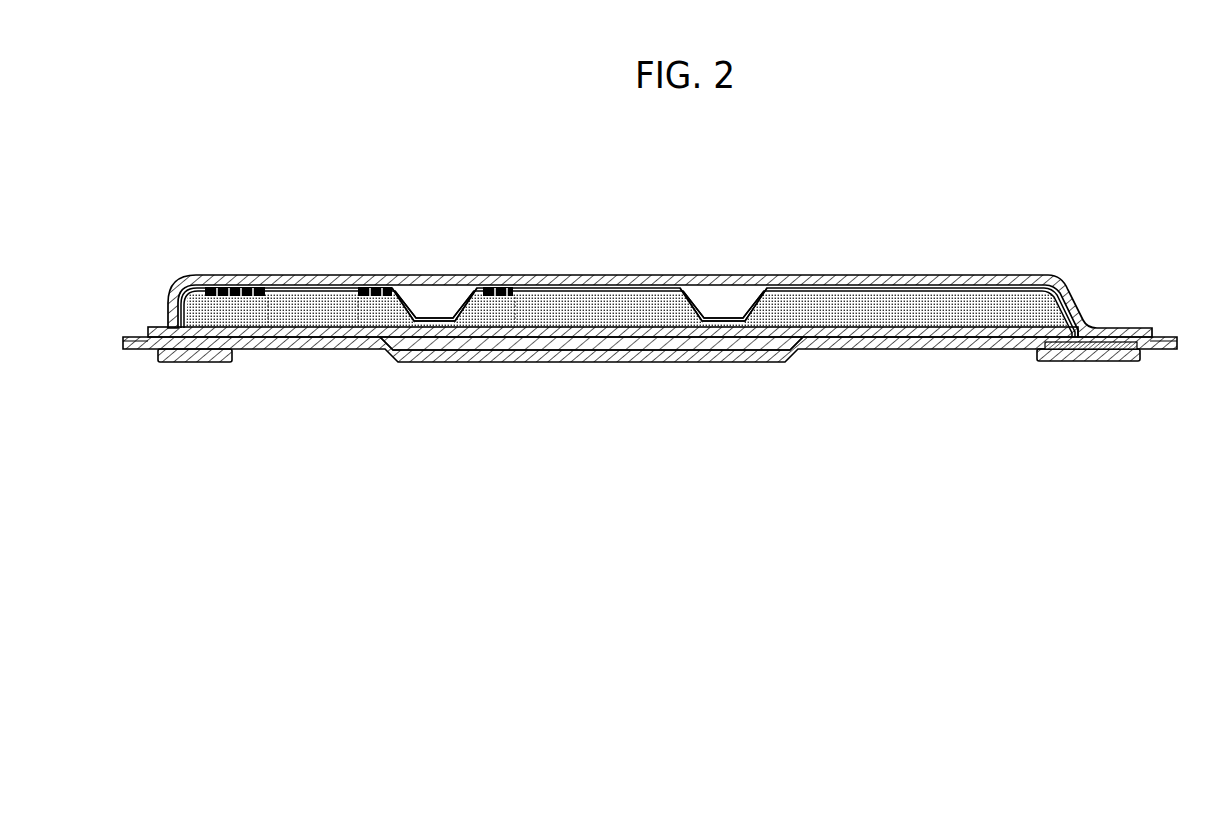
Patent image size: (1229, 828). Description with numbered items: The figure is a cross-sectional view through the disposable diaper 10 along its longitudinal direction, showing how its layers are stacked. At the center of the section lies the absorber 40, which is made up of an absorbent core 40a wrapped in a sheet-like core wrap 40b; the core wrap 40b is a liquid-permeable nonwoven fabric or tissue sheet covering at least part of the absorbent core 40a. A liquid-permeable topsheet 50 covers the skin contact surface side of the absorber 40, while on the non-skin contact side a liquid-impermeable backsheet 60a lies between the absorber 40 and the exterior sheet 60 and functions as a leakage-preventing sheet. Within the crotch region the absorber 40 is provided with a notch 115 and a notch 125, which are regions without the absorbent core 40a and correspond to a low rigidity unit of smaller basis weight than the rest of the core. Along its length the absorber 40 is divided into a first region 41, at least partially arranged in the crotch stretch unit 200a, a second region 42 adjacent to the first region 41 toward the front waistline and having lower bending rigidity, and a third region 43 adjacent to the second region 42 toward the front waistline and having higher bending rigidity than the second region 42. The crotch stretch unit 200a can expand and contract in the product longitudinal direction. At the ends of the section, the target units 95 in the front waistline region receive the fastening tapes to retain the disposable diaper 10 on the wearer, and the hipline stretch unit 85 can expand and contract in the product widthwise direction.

The disposable diaper 10 is at (1118, 199).
The topsheet 50 is at (1021, 275).
The second region 42 is at (308, 302).
The absorber 40 is at (694, 293).
The core wrap 40b is at (1080, 297).
The absorbent core 40a is at (1077, 308).
The third region 43 is at (217, 287).
The first region 41 is at (372, 302).
The notch 115 is at (442, 305).
The notch 125 is at (720, 298).
The backsheet 60a is at (940, 350).
The exterior sheet 60 is at (1097, 354).
The crotch stretch unit 200a is at (598, 340).
The hipline stretch unit 85 is at (1115, 358).
The target unit 95 is at (207, 362).